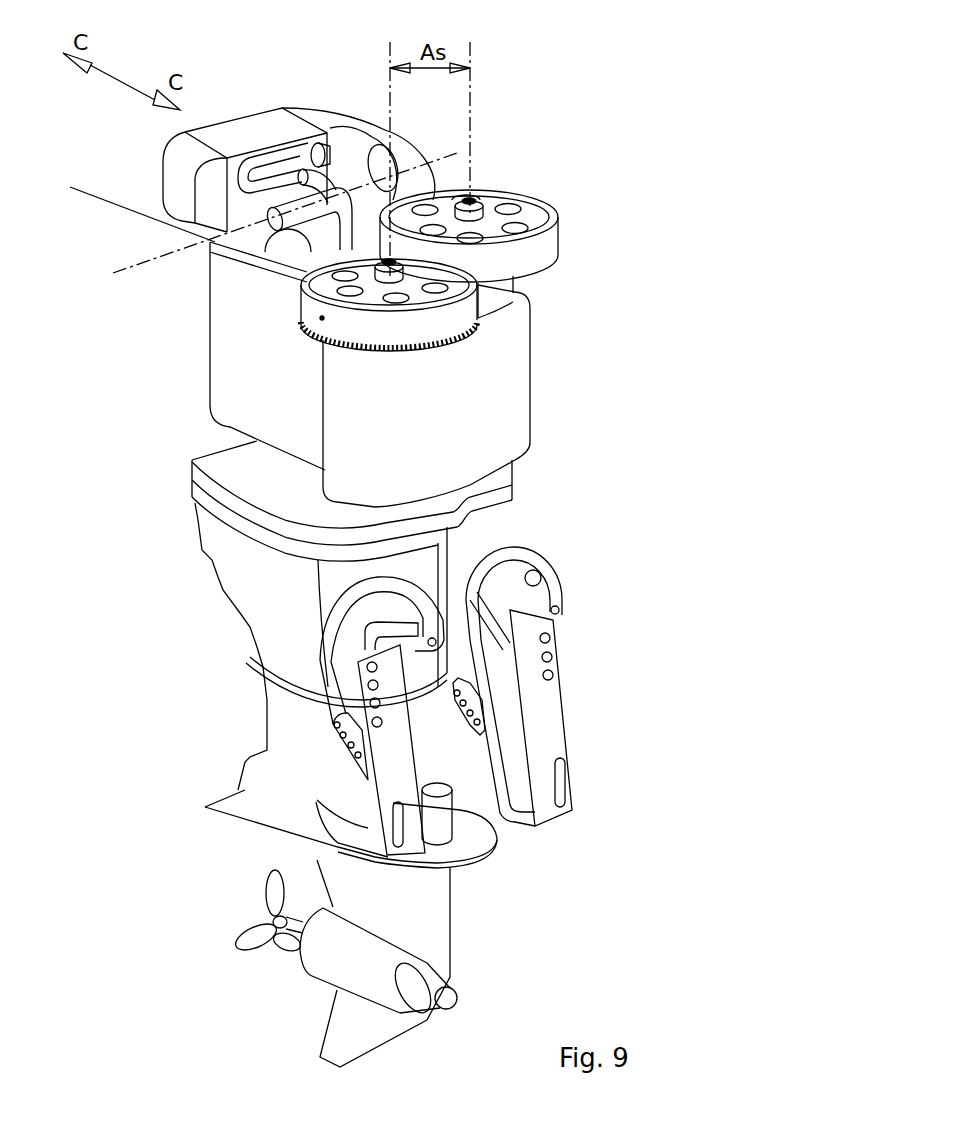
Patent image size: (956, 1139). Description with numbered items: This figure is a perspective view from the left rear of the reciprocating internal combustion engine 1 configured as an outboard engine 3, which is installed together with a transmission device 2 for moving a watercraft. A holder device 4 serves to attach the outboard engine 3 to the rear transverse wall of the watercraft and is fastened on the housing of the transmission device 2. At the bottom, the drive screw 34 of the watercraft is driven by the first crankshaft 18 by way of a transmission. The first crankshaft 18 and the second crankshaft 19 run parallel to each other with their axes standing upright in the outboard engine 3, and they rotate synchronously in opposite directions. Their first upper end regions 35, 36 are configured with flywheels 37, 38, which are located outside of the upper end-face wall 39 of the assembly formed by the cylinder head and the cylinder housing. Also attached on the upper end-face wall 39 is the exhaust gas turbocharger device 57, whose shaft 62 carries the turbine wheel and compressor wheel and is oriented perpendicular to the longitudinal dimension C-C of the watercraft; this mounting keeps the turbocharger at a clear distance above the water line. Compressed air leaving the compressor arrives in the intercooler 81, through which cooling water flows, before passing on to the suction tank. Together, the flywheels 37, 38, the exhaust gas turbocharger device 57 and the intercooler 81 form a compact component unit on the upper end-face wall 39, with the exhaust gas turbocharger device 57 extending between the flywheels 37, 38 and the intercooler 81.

The reciprocating internal combustion engine 1 is at (296, 750).
The transmission device 2 is at (317, 785).
The outboard engine 3 is at (540, 407).
The holder device 4 is at (556, 830).
The first crankshaft 18 is at (476, 209).
The second crankshaft 19 is at (392, 272).
The drive screw 34 is at (243, 955).
The first upper end region 35 is at (517, 187).
The upper end region of the second crankshaft 36 is at (382, 296).
The flywheel 37 is at (563, 246).
The flywheel 38 is at (322, 318).
The upper end-face wall 39 is at (100, 197).
The exhaust gas turbocharger device 57 is at (352, 113).
The shaft 62 is at (152, 258).
The intercooler 81 is at (233, 118).